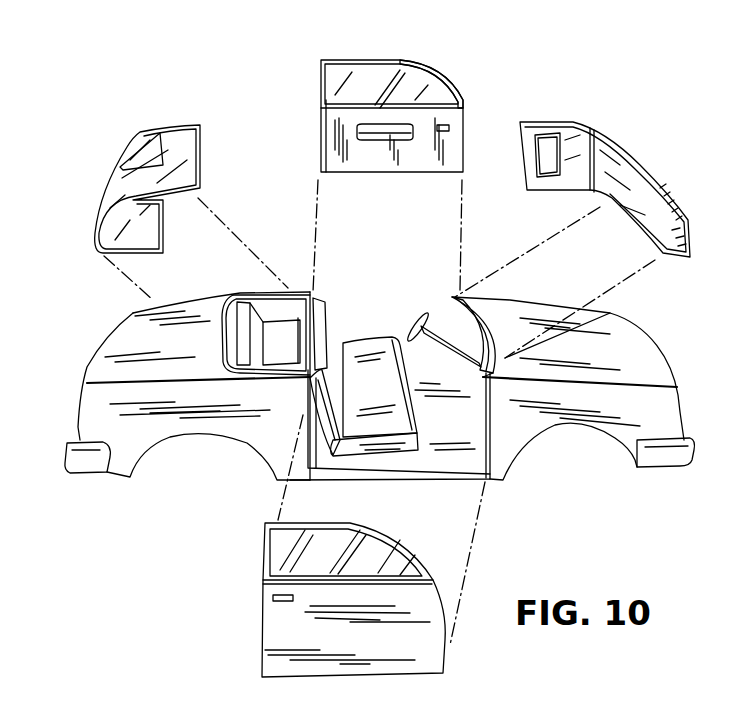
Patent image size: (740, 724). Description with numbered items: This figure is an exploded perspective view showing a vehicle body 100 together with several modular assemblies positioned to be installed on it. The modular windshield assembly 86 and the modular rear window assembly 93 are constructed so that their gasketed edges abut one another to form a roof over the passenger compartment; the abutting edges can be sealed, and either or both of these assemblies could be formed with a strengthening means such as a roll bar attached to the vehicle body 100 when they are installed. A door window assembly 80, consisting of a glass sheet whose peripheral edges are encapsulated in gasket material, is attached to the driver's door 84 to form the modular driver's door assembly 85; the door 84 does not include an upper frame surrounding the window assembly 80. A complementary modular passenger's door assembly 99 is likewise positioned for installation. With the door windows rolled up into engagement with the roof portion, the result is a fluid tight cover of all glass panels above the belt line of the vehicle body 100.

The door window assembly 80 is at (407, 94).
The driver's door 84 is at (335, 150).
The modular driver's door assembly 85 is at (469, 98).
The modular windshield assembly 86 is at (622, 132).
The modular rear window assembly 93 is at (108, 160).
The modular passenger's door assembly 99 is at (250, 615).
The vehicle body 100 is at (100, 489).